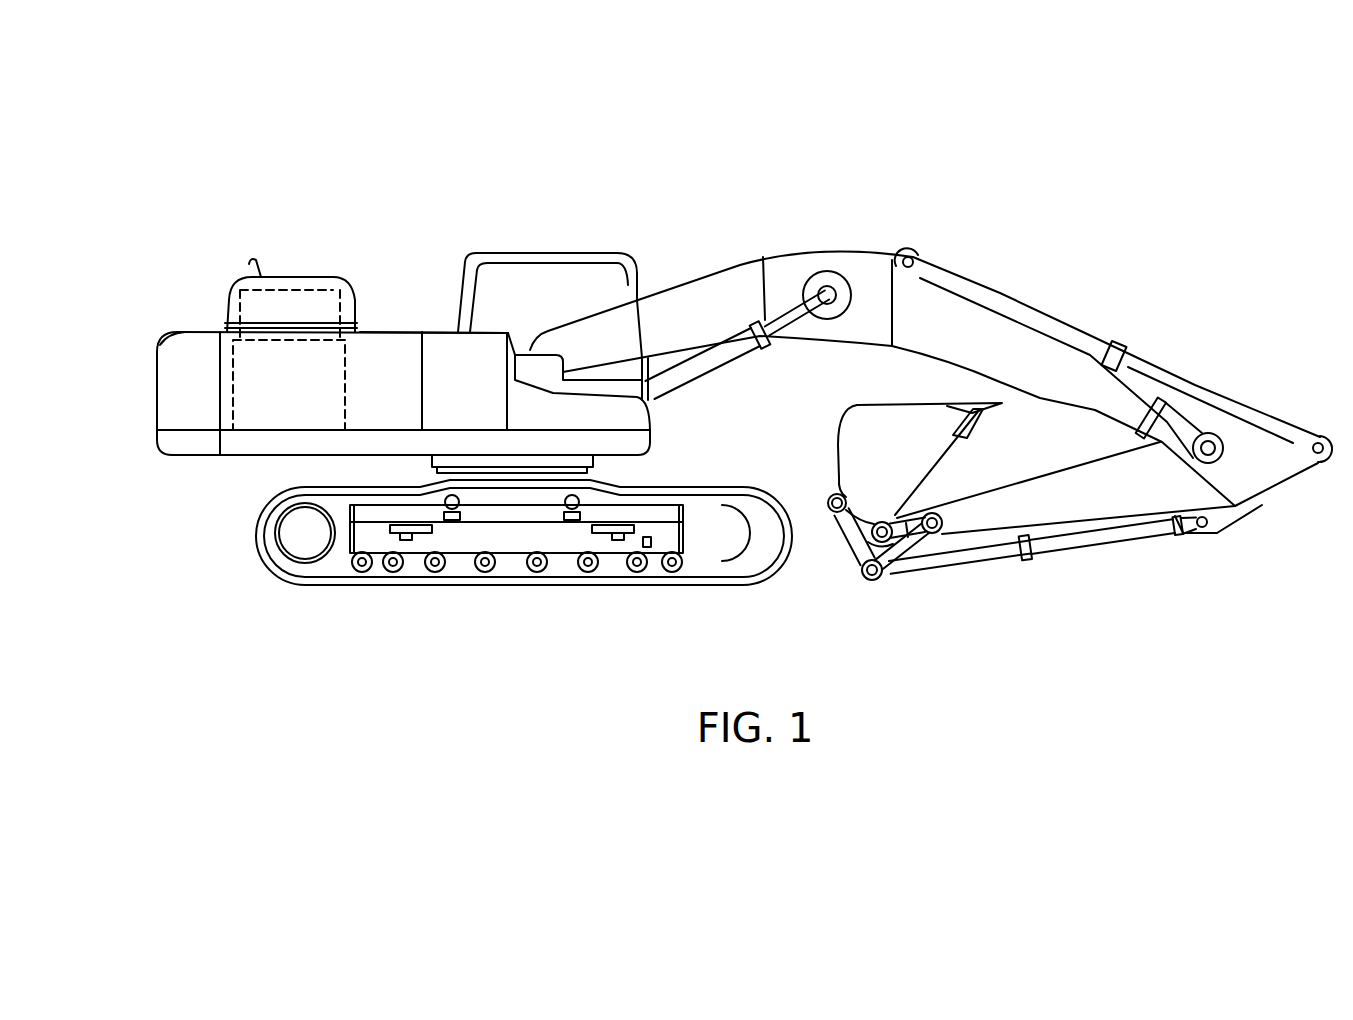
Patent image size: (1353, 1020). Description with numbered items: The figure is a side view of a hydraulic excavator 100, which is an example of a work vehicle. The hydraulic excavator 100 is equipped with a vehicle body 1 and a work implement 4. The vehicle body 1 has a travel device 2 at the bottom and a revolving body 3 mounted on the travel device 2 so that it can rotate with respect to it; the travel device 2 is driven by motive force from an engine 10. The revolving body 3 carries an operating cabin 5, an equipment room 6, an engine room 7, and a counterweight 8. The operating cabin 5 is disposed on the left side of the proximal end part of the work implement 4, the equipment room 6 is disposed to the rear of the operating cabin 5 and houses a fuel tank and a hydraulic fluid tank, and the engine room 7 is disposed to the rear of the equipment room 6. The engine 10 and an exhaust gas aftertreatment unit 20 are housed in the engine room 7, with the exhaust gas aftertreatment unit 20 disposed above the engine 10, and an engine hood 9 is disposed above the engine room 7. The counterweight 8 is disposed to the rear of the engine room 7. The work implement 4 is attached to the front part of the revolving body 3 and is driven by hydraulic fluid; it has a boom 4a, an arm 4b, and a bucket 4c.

The hydraulic excavator 100 is at (970, 158).
The vehicle body 1 is at (604, 233).
The travel device 2 is at (258, 562).
The revolving body 3 is at (183, 467).
The work implement 4 is at (1104, 311).
The boom 4a is at (732, 290).
The arm 4b is at (974, 522).
The bucket 4c is at (863, 436).
The operating cabin 5 is at (507, 254).
The equipment room 6 is at (398, 333).
The engine room 7 is at (330, 335).
The counterweight 8 is at (197, 330).
The engine hood 9 is at (280, 277).
The engine 10 is at (228, 365).
The exhaust gas aftertreatment unit 20 is at (306, 290).